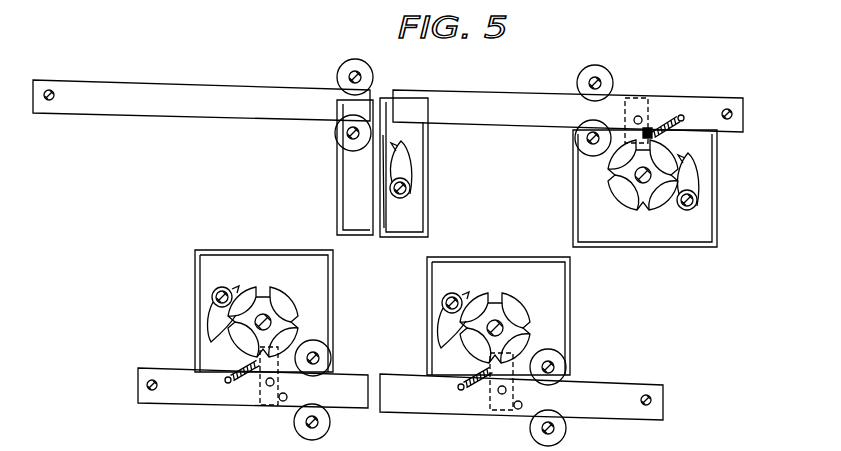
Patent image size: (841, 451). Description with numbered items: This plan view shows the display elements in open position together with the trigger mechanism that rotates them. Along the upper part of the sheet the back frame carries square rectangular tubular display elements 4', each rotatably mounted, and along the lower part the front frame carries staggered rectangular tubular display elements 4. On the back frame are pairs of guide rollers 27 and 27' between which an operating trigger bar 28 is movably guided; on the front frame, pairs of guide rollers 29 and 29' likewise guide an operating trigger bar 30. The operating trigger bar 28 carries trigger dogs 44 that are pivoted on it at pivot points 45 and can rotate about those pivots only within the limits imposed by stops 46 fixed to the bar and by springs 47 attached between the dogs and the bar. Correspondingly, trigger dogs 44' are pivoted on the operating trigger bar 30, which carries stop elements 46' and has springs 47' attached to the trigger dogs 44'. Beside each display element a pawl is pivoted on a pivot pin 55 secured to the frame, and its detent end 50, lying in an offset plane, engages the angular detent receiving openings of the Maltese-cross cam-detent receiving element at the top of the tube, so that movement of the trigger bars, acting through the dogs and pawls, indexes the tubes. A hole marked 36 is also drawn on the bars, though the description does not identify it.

The operating trigger bar 28 is at (232, 88).
The pivot hole 36 is at (54, 100).
The guide roller 27 is at (454, 74).
The guide roller 27' is at (442, 136).
The rectangular tubular display element 4' is at (548, 168).
The detent end 50 is at (645, 195).
The pivot pin 55 is at (699, 200).
The stop 46 is at (635, 103).
The pivot point 45 is at (633, 120).
The trigger dog 44 is at (662, 101).
The spring 47 is at (686, 101).
The rectangular tubular display element 4 is at (382, 298).
The operating trigger bar 30 is at (615, 397).
The stop element 46' is at (318, 390).
The guide roller 29 is at (571, 356).
The guide roller 29' is at (575, 430).
The trigger dog 44' is at (377, 399).
The spring 47' is at (358, 382).